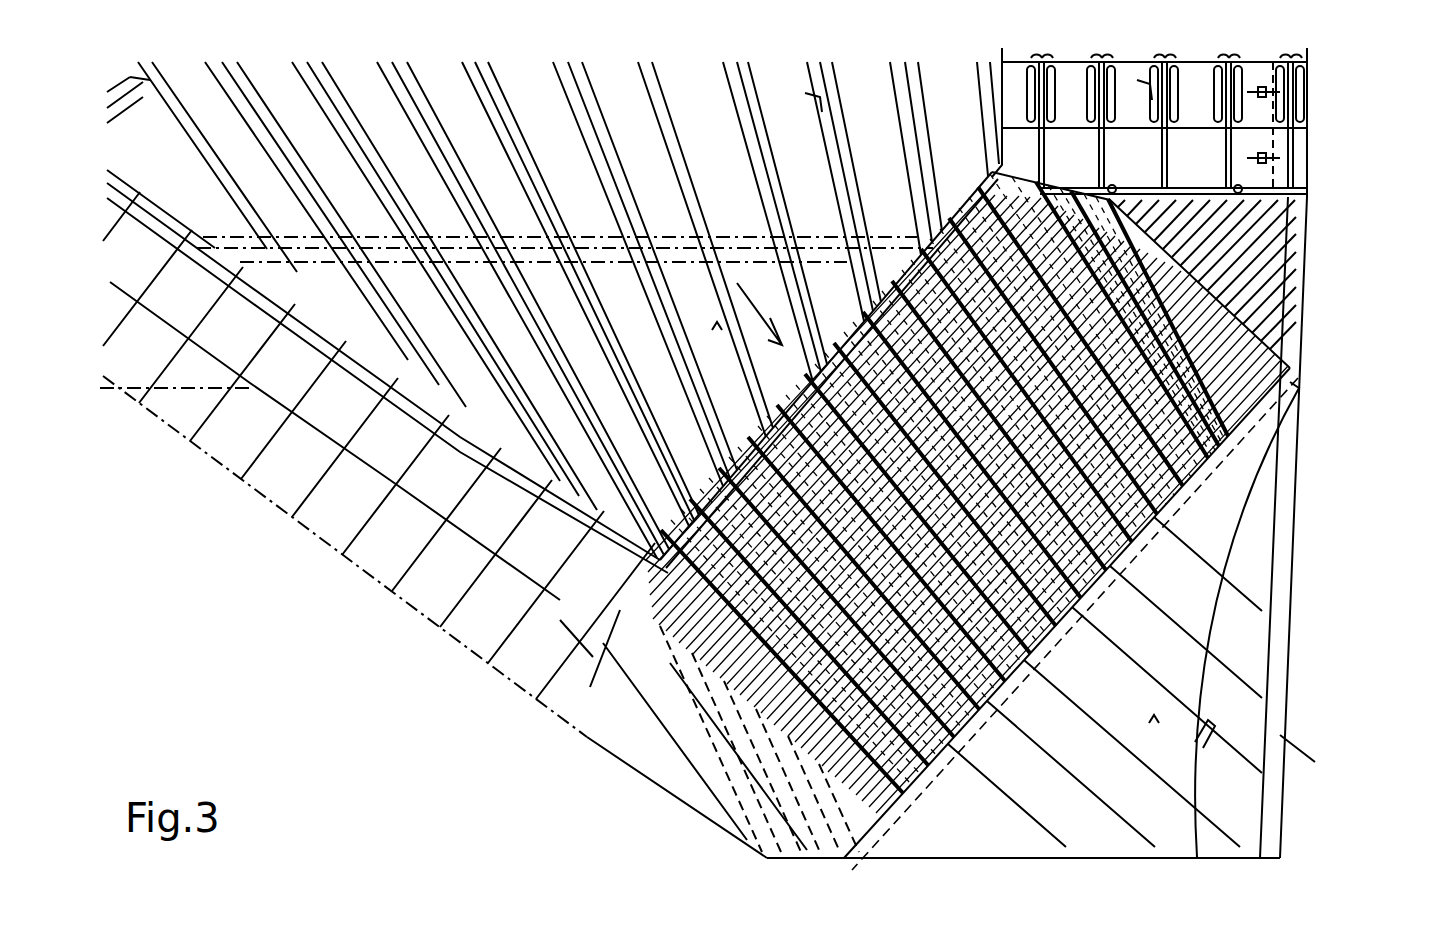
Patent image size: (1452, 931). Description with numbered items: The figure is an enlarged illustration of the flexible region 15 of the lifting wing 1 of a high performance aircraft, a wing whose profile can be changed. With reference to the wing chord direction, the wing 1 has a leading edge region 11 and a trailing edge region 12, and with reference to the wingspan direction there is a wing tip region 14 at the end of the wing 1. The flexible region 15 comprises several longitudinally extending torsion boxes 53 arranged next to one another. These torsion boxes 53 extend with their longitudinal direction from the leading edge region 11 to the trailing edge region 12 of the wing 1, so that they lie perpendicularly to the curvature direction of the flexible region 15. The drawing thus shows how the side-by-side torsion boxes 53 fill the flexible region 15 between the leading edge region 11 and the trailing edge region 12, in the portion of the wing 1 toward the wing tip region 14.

The lifting wing 1 is at (172, 579).
The leading edge region 11 is at (673, 780).
The trailing edge region 12 is at (1265, 243).
The wing tip region 14 is at (1167, 658).
The flexible region 15 is at (1027, 467).
The torsion boxes 53 is at (1183, 303).